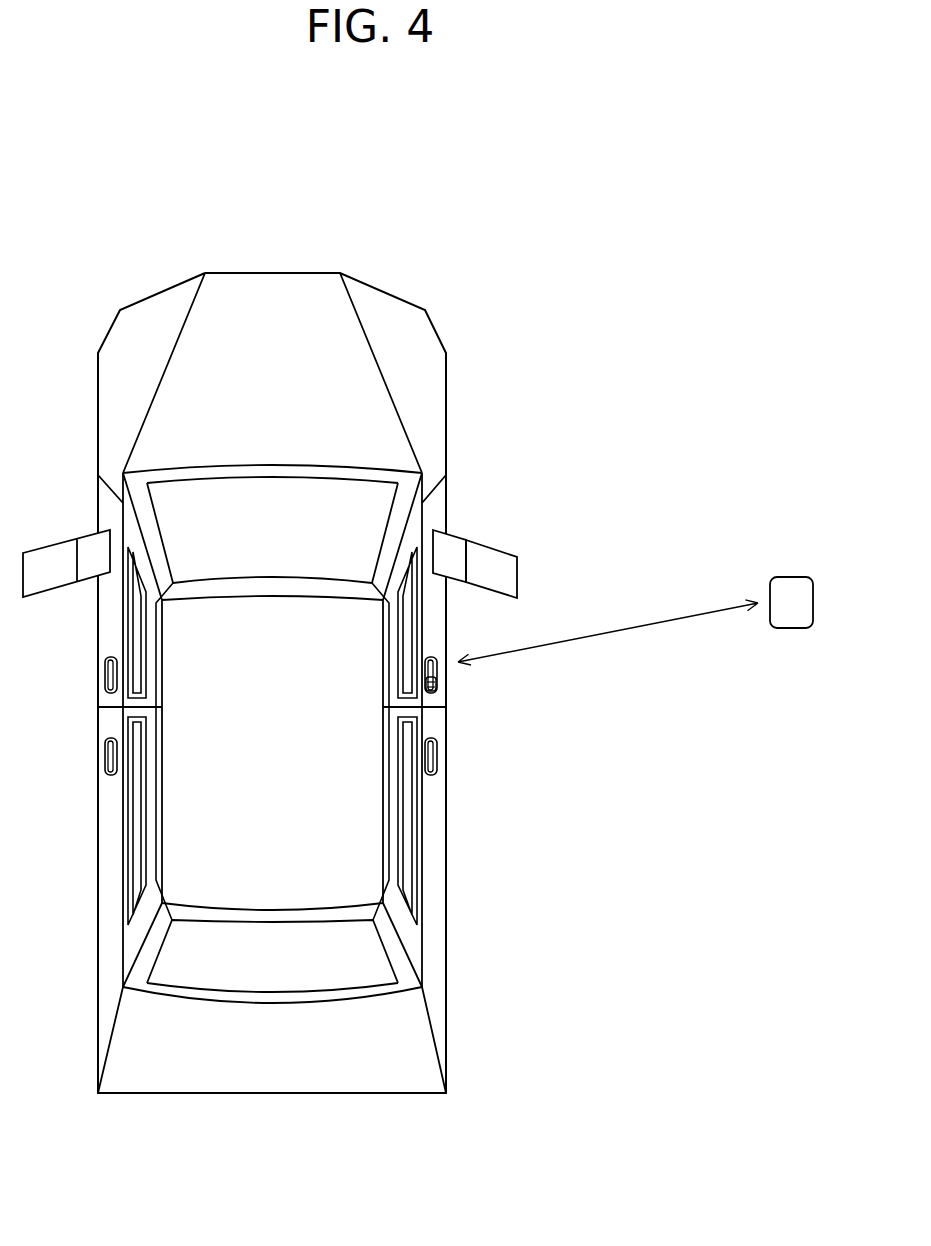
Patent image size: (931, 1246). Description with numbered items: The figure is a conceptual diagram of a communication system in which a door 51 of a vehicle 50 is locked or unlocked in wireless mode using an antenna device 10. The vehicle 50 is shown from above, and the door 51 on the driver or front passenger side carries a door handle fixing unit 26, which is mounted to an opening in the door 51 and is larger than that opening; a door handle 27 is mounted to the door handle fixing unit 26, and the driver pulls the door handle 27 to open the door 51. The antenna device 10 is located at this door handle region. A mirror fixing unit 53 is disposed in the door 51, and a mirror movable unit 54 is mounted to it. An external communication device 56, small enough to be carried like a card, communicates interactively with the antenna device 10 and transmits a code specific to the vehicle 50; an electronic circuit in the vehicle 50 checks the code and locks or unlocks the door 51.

The antenna device 10 is at (440, 675).
The door handle fixing unit 26 is at (440, 687).
The door handle 27 is at (440, 680).
The vehicle 50 is at (387, 313).
The door 51 is at (432, 632).
The mirror fixing unit 53 is at (453, 548).
The mirror movable unit 54 is at (503, 567).
The external communication device 56 is at (785, 613).